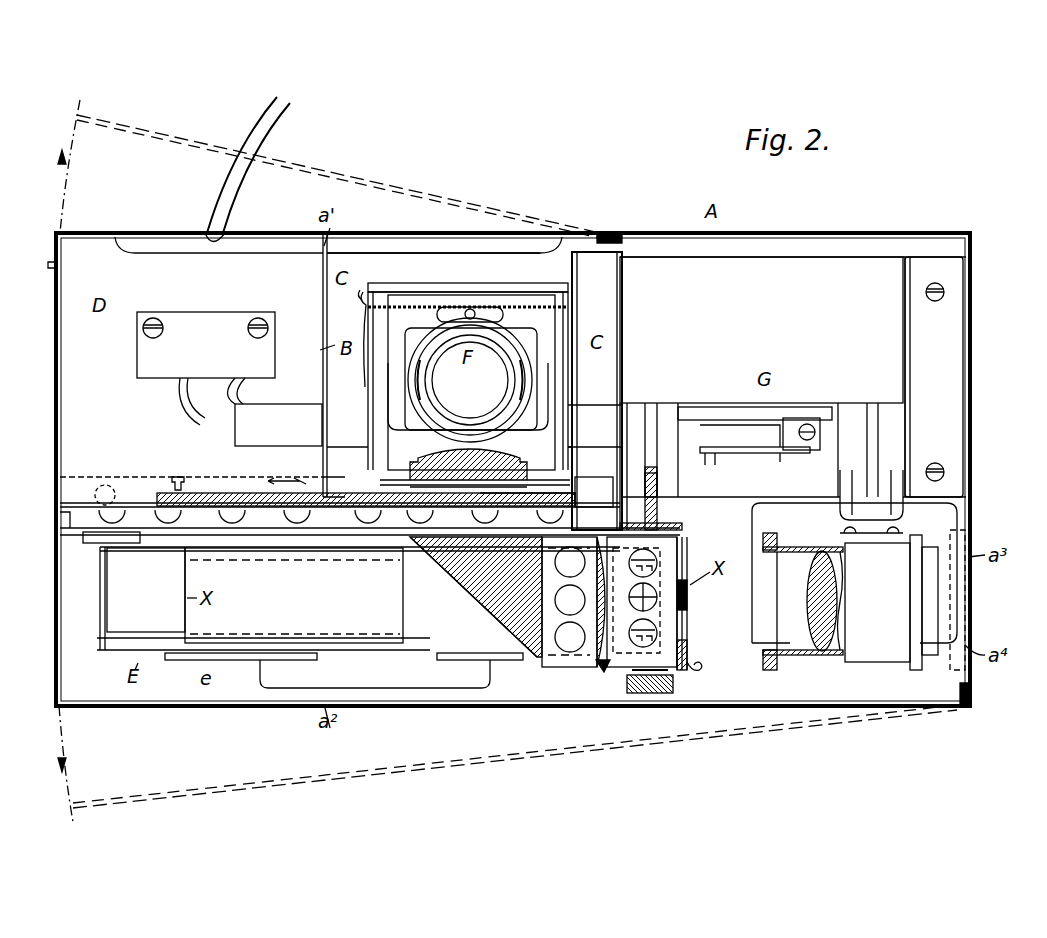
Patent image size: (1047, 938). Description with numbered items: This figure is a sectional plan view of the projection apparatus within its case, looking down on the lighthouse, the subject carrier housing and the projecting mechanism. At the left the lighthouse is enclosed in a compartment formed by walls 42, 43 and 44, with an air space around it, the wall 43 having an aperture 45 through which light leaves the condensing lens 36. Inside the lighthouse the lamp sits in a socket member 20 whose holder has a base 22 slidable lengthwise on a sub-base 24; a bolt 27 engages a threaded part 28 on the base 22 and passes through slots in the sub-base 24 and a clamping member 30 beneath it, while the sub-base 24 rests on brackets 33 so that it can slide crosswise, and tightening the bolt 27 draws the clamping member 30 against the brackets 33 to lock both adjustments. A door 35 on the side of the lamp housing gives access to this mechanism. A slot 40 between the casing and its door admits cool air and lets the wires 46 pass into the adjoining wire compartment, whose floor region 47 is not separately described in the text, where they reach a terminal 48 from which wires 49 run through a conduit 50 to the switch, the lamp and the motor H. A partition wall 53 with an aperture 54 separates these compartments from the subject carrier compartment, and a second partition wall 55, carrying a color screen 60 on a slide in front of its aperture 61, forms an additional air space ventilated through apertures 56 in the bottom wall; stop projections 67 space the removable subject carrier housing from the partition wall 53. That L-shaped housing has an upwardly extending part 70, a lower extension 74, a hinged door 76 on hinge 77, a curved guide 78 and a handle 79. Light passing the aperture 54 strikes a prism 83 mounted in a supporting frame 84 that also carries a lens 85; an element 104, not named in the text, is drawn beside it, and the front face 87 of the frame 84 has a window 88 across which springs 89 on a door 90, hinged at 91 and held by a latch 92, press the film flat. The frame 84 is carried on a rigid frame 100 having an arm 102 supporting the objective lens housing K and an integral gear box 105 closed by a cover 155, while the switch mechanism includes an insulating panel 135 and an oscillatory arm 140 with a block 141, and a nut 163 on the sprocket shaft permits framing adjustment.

The socket member 20 is at (525, 345).
The base 22 is at (540, 378).
The sub-base 24 is at (548, 440).
The bolt 27 is at (473, 308).
The threaded part 28 is at (450, 307).
The clamping member 30 is at (538, 293).
The brackets 33 is at (378, 397).
The door 35 is at (395, 307).
The condensing lens 36 is at (462, 456).
The slot 40 is at (400, 250).
The wall 42 is at (622, 330).
The wall 43 is at (594, 482).
The wall 44 is at (312, 350).
The aperture 45 is at (468, 478).
The wires 46 is at (240, 192).
The compartment 47 is at (191, 375).
The terminal 48 is at (206, 345).
The wires 49 is at (185, 400).
The conduit 50 is at (278, 425).
The partition wall 53 is at (340, 503).
The aperture 54 is at (296, 517).
The partition wall 55 is at (90, 497).
The apertures 56 is at (115, 500).
The color screen 60 is at (368, 480).
The aperture 61 is at (510, 498).
The stop projection 67 is at (95, 545).
The upwardly extending part 70 is at (345, 585).
The lower extension 74 is at (476, 597).
The door 76 is at (352, 648).
The hinge 77 is at (275, 652).
The curved guide 78 is at (142, 598).
The handle 79 is at (375, 672).
The prism 83 is at (505, 600).
The supporting frame 84 is at (550, 640).
The lens 85 is at (605, 665).
The front face 87 is at (688, 655).
The window 88 is at (688, 605).
The springs 89 is at (688, 555).
The door 90 is at (685, 528).
The hinge 91 is at (685, 497).
The latch 92 is at (700, 670).
The frame 100 is at (734, 433).
The arm 102 is at (875, 460).
The lens 104 is at (640, 596).
The gear box 105 is at (910, 352).
The insulating panel 135 is at (770, 420).
The oscillatory arm 140 is at (790, 455).
The block 141 is at (738, 455).
The cover 155 is at (882, 377).
The nut 163 is at (655, 693).
The motor H is at (854, 573).
The objective lens housing K is at (864, 600).